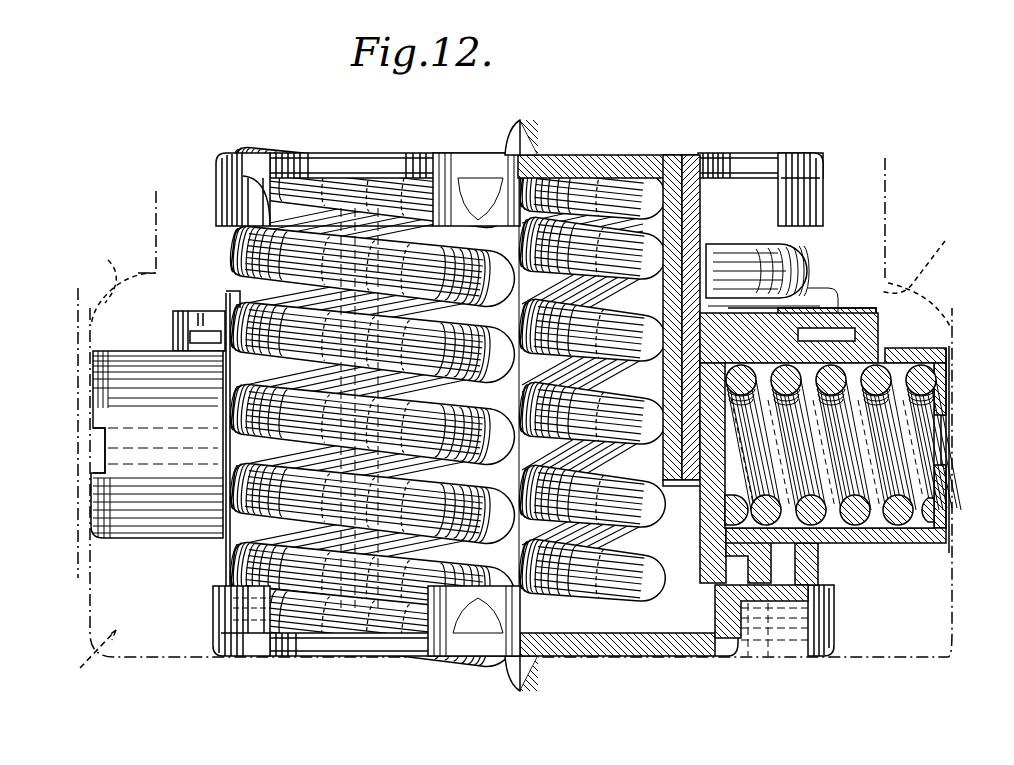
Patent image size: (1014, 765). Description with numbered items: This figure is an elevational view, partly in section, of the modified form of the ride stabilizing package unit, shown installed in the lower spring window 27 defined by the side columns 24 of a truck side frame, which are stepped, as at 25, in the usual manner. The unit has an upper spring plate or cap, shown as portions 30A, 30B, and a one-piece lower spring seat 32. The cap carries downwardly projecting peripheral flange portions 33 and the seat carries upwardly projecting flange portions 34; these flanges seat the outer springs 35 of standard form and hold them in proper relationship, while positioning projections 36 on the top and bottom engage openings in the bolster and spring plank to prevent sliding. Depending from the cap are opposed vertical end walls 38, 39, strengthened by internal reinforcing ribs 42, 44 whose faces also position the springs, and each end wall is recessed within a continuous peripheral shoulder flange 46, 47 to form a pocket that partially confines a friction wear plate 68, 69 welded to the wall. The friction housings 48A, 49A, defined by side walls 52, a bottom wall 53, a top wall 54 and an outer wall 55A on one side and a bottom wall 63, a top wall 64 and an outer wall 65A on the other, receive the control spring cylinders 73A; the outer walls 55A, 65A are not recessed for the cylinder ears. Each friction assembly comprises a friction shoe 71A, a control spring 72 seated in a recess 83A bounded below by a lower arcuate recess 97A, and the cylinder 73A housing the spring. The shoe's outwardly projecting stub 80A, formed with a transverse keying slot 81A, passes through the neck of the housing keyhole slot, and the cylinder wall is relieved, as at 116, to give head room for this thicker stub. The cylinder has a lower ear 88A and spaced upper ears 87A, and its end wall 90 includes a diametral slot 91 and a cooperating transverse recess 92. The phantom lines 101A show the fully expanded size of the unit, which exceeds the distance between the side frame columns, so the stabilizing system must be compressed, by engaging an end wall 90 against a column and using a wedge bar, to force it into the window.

The side columns 24 is at (100, 300).
The step 25 is at (100, 285).
The lower spring window 27 is at (91, 660).
The upper spring plate 30A is at (318, 147).
The upper spring plate 30B is at (700, 152).
The spring seat 32 is at (358, 650).
The peripheral flange portions 33 is at (212, 178).
The peripheral flange portions 34 is at (208, 628).
The springs 35 is at (514, 383).
The positioning projections 36 is at (528, 127).
The end wall 38 is at (372, 423).
The end wall 39 is at (660, 240).
The reinforcing rib 42 is at (565, 190).
The reinforcing rib 44 is at (613, 180).
The peripheral shoulder flange 46 is at (365, 338).
The peripheral shoulder flange 47 is at (663, 388).
The friction housing 48A is at (218, 297).
The friction housing 49A is at (813, 270).
The side walls 52 is at (240, 440).
The bottom wall 53 is at (232, 598).
The top wall 54 is at (240, 290).
The outer wall 55A is at (222, 548).
The bottom wall 63 is at (710, 592).
The top wall 64 is at (758, 253).
The outer wall 65A is at (817, 300).
The wear plate 68 is at (345, 237).
The wear plate 69 is at (665, 405).
The friction shoe 71A is at (158, 326).
The control spring 72 is at (790, 465).
The control spring cylinder 73A is at (953, 268).
The stub 80A is at (862, 318).
The keying slot 81A is at (833, 307).
The control spring seat recess 83A is at (694, 473).
The upper ears 87A is at (789, 338).
The lower ear 88A is at (775, 555).
The end wall 90 is at (85, 500).
The diametral slot 91 is at (85, 432).
The transverse recess 92 is at (945, 335).
The lower arcuate recess 97A is at (700, 545).
The phantom lines 101A is at (70, 390).
The relieved portion 116 is at (158, 345).